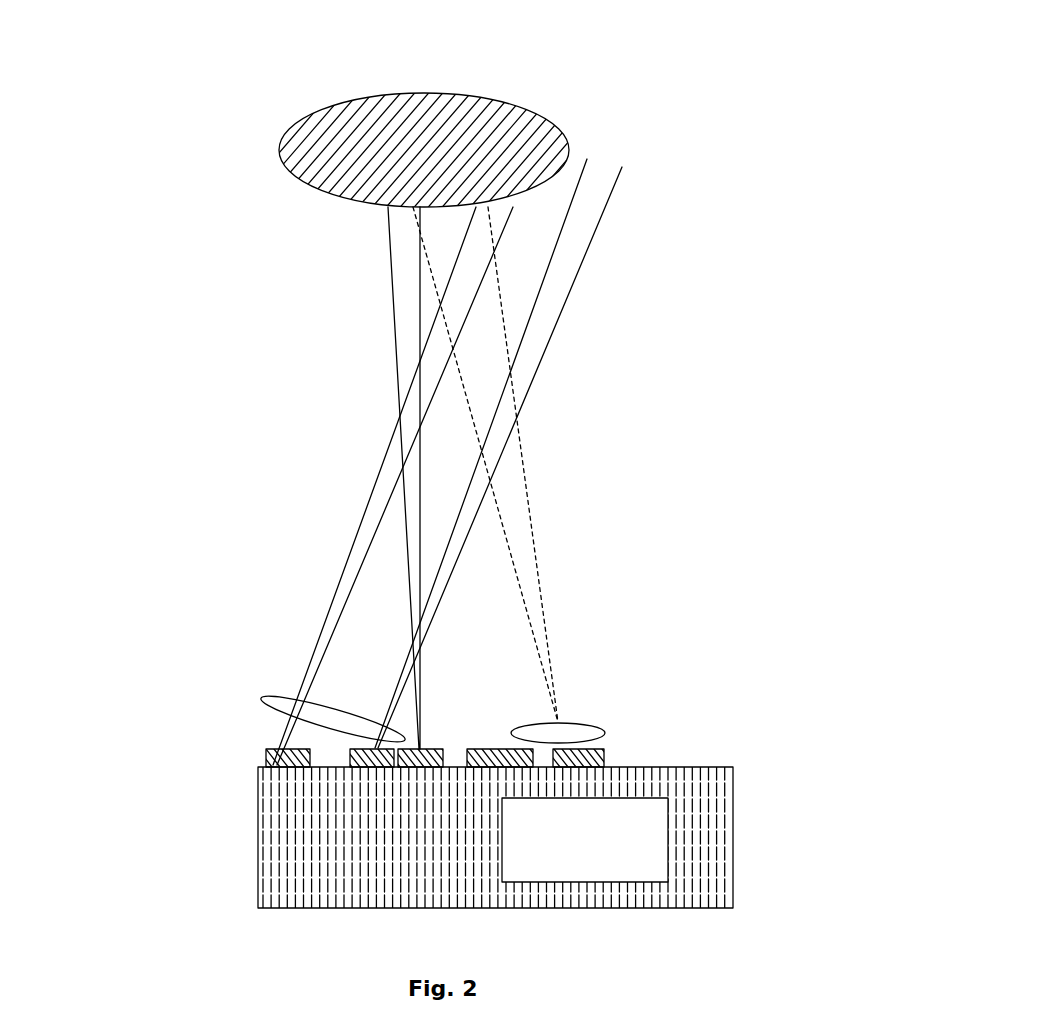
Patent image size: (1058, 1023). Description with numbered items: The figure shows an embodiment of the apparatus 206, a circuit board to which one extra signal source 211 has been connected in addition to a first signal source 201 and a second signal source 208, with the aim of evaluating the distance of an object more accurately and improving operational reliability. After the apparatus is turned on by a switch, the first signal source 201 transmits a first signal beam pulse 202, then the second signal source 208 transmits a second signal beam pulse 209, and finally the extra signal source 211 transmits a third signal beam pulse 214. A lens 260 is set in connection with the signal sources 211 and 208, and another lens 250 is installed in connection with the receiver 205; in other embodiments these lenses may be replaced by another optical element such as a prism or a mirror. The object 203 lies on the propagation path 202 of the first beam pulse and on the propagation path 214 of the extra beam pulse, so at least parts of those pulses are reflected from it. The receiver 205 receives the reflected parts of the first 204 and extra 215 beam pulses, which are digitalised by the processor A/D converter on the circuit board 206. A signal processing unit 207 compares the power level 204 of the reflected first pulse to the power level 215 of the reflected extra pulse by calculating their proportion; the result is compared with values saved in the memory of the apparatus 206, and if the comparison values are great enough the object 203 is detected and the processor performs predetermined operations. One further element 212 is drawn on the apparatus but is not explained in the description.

The object 203 is at (567, 140).
The first signal beam pulse 202 is at (395, 368).
The third signal beam pulse 214 is at (393, 453).
The second signal beam pulse 209 is at (470, 522).
The reflected part of first beam pulse 204 is at (532, 605).
The reflected part of extra beam pulse 215 is at (532, 525).
The lens 250 is at (560, 728).
The lens 260 is at (290, 712).
The apparatus 206 is at (705, 790).
The signal processing unit 207 is at (642, 857).
The extra signal source 211 is at (267, 760).
The second signal source 208 is at (350, 768).
The first signal source 201 is at (420, 768).
The light detector 212 is at (483, 767).
The receiver 205 is at (603, 765).